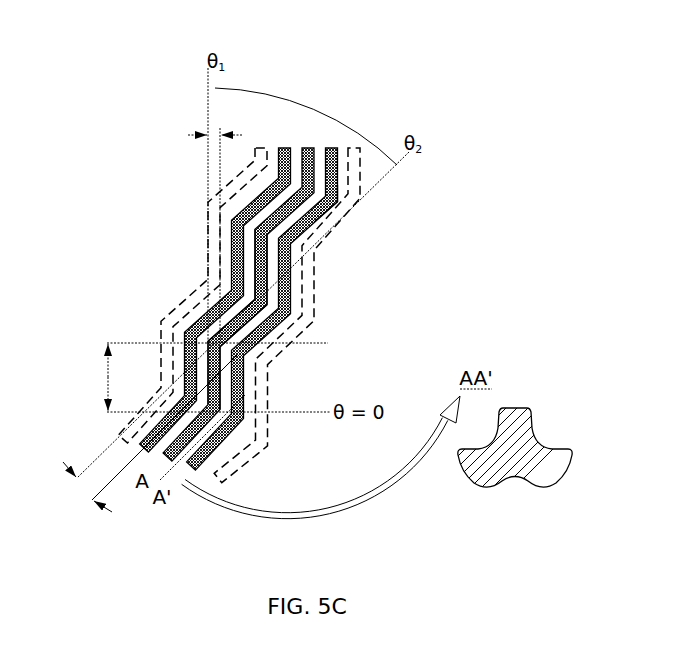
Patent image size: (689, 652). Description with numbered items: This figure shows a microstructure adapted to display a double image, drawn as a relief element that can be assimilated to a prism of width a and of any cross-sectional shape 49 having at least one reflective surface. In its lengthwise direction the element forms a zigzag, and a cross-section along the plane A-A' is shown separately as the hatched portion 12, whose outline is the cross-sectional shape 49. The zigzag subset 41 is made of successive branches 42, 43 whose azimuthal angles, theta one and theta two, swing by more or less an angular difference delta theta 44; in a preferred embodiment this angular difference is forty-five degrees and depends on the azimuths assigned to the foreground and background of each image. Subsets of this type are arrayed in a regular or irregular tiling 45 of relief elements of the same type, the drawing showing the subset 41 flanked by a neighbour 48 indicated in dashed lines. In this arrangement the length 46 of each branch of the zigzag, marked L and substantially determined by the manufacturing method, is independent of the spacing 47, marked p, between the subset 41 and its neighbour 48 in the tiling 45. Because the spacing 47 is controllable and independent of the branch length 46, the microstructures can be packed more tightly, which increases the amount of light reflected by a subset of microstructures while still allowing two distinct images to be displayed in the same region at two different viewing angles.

The rotor body cross-section 12 is at (497, 427).
The subset 41 is at (270, 263).
The branch 42 is at (222, 380).
The branch 43 is at (255, 318).
The Δθ 44 is at (326, 77).
The tiling 45 is at (360, 134).
The length 46 is at (83, 368).
The spacing 47 is at (77, 491).
The neighbour 48 is at (336, 201).
The cross-sectional shape 49 is at (509, 462).